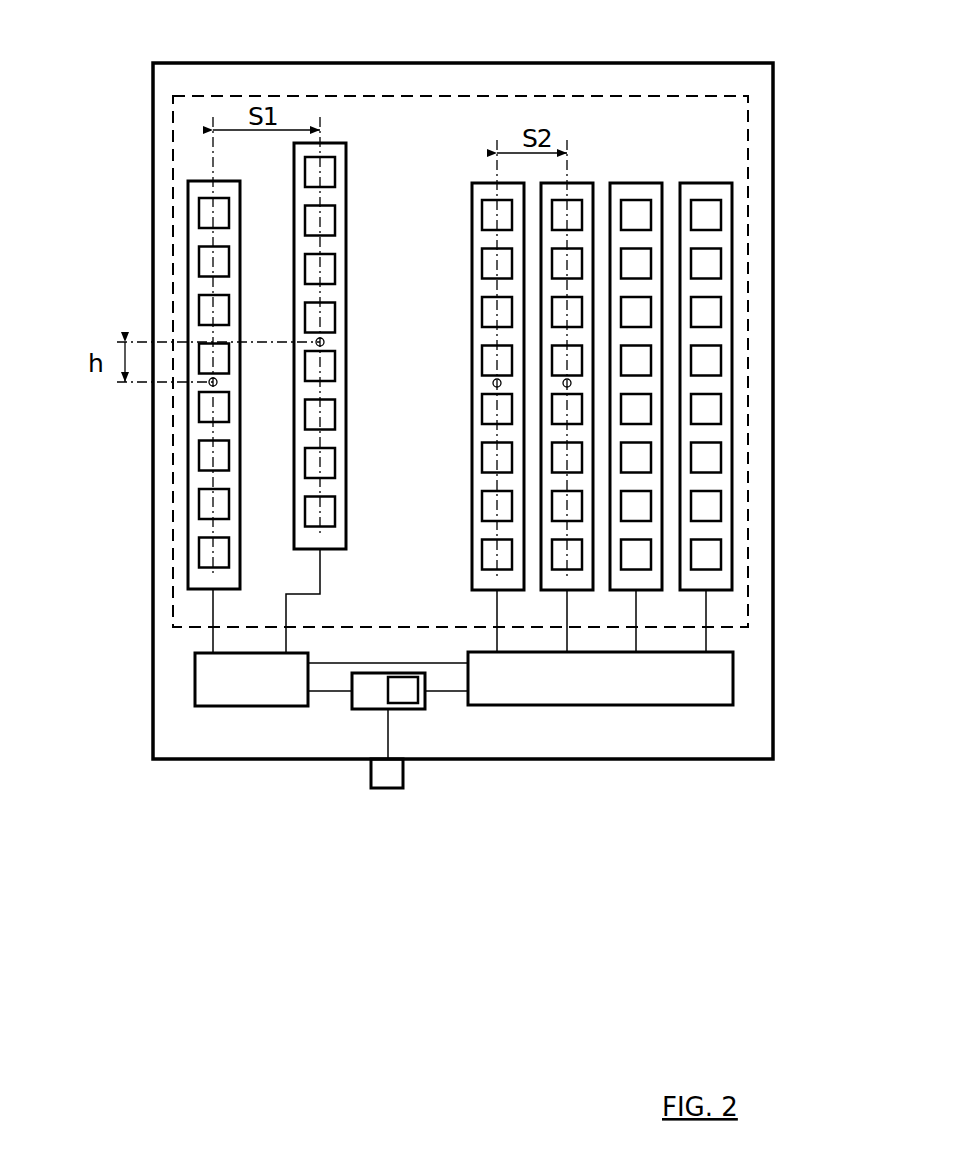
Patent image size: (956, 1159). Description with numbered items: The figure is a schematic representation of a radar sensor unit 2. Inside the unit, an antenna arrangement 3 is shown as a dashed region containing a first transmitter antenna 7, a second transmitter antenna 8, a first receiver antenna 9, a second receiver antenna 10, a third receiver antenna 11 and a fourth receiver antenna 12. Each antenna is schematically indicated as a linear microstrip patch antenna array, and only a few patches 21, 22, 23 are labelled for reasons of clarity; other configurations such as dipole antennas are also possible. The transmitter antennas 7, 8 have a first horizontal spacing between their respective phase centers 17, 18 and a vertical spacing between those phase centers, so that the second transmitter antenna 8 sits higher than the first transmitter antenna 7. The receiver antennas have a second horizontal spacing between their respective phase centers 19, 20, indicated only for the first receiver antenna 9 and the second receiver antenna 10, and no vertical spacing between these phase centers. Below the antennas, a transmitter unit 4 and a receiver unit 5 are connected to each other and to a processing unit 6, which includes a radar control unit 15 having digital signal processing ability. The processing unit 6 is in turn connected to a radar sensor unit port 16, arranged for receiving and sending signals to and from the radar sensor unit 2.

The radar sensor unit 2 is at (740, 795).
The antenna arrangement 3 is at (402, 95).
The transmitter unit 4 is at (251, 679).
The receiver unit 5 is at (600, 678).
The processing unit 6 is at (416, 757).
The first transmitter antenna 7 is at (151, 338).
The second transmitter antenna 8 is at (335, 142).
The first receiver antenna 9 is at (470, 198).
The second receiver antenna 10 is at (582, 183).
The third receiver antenna 11 is at (693, 320).
The fourth receiver antenna 12 is at (728, 298).
The radar control unit 15 is at (404, 693).
The radar sensor unit port 16 is at (387, 778).
The phase center 17 is at (213, 382).
The phase center 18 is at (320, 342).
The phase center 19 is at (497, 383).
The phase center 20 is at (567, 383).
The patch 21 is at (208, 550).
The patch 22 is at (638, 558).
The patch 23 is at (710, 502).